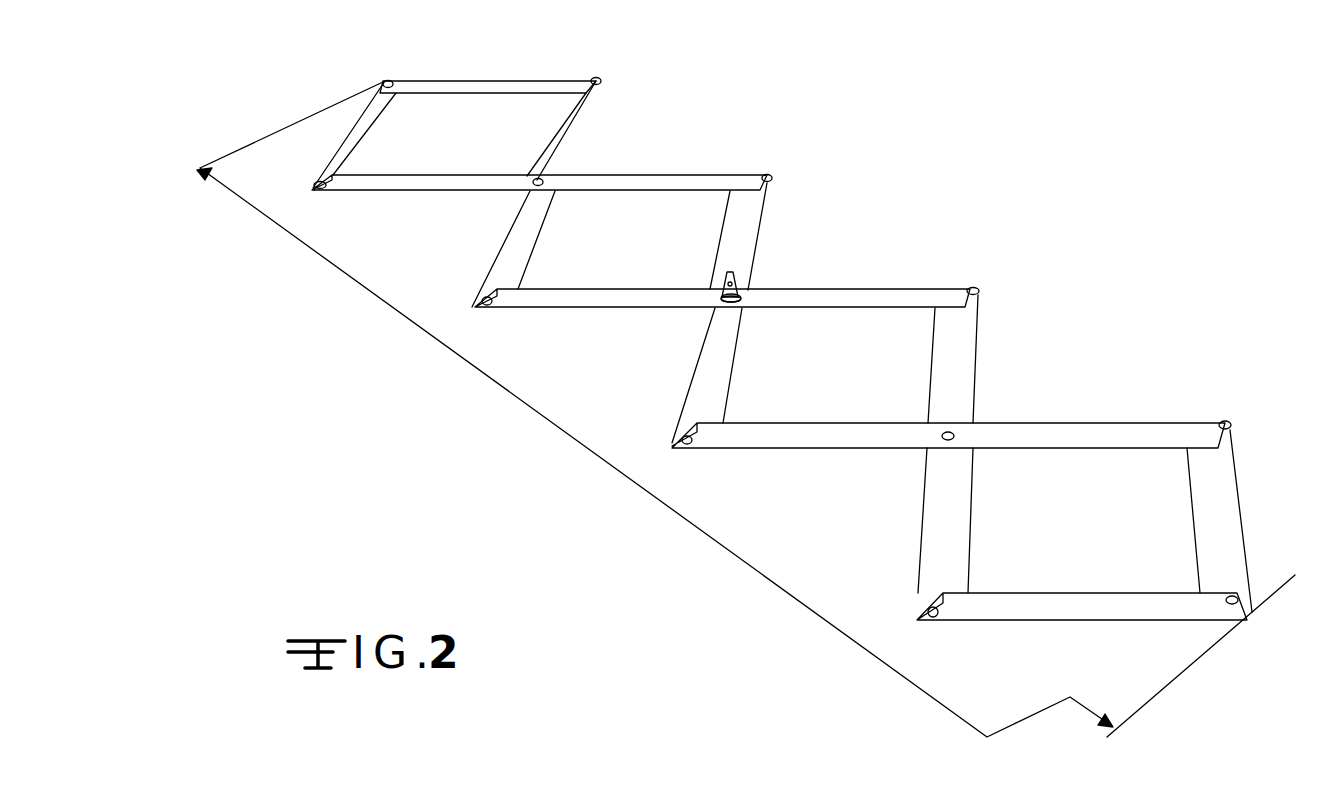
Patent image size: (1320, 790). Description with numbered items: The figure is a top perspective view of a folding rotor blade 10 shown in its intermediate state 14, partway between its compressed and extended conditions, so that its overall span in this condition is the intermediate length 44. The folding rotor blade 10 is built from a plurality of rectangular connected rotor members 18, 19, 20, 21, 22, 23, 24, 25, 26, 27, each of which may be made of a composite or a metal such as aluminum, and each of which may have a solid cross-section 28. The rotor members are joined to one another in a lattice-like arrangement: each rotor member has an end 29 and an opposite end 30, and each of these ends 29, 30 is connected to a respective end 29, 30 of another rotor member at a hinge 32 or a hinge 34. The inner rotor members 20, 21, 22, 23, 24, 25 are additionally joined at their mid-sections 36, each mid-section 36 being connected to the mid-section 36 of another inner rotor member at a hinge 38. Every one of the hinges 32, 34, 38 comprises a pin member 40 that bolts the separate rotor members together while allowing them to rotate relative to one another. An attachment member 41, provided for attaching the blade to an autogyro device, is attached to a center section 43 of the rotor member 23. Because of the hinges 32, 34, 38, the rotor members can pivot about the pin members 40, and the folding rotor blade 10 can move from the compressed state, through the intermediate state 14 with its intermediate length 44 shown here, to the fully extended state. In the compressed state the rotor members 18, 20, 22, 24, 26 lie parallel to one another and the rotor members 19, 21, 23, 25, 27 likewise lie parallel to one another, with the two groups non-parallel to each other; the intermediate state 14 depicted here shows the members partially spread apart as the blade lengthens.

The folding rotor blade 10 is at (1005, 262).
The intermediate state 14 is at (1055, 340).
The rotor member 18 is at (350, 132).
The rotor member 19 is at (397, 78).
The inner rotor member 20 is at (566, 134).
The inner rotor member 21 is at (432, 193).
The inner rotor member 22 is at (760, 222).
The rotor member 23 is at (603, 308).
The inner rotor member 24 is at (977, 367).
The inner rotor member 25 is at (838, 448).
The rotor member 26 is at (1240, 506).
The rotor member 27 is at (1097, 622).
The solid cross-section 28 is at (364, 135).
The end 29 is at (370, 85).
The end 30 is at (575, 82).
The hinge 32 is at (384, 82).
The hinge 34 is at (598, 80).
The mid-section 36 is at (527, 193).
The hinge 38 is at (533, 177).
The pin member 40 is at (388, 82).
The attachment member 41 is at (725, 275).
The center section 43 is at (742, 308).
The intermediate length 44 is at (560, 432).